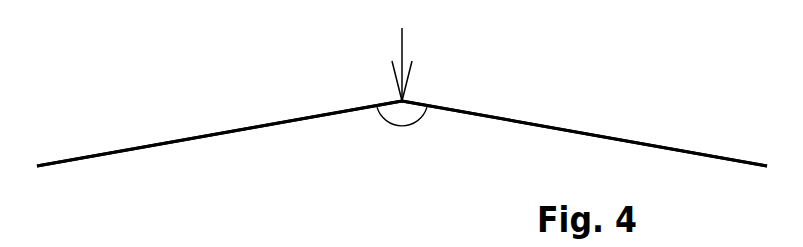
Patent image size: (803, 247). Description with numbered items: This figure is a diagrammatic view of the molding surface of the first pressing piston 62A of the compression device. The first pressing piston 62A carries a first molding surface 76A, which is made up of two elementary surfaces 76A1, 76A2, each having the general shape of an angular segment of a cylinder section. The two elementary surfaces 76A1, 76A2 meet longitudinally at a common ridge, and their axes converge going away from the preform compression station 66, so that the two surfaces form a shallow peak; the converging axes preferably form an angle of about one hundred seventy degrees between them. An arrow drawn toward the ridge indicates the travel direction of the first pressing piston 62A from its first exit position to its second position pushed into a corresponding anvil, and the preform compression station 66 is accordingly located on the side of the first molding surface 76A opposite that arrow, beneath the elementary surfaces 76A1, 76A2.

The first pressing piston 62A is at (128, 95).
The first molding surface 76A is at (288, 120).
The elementary surface 76A1 is at (149, 149).
The elementary surface 76A2 is at (632, 143).
The preform compression station 66 is at (401, 133).